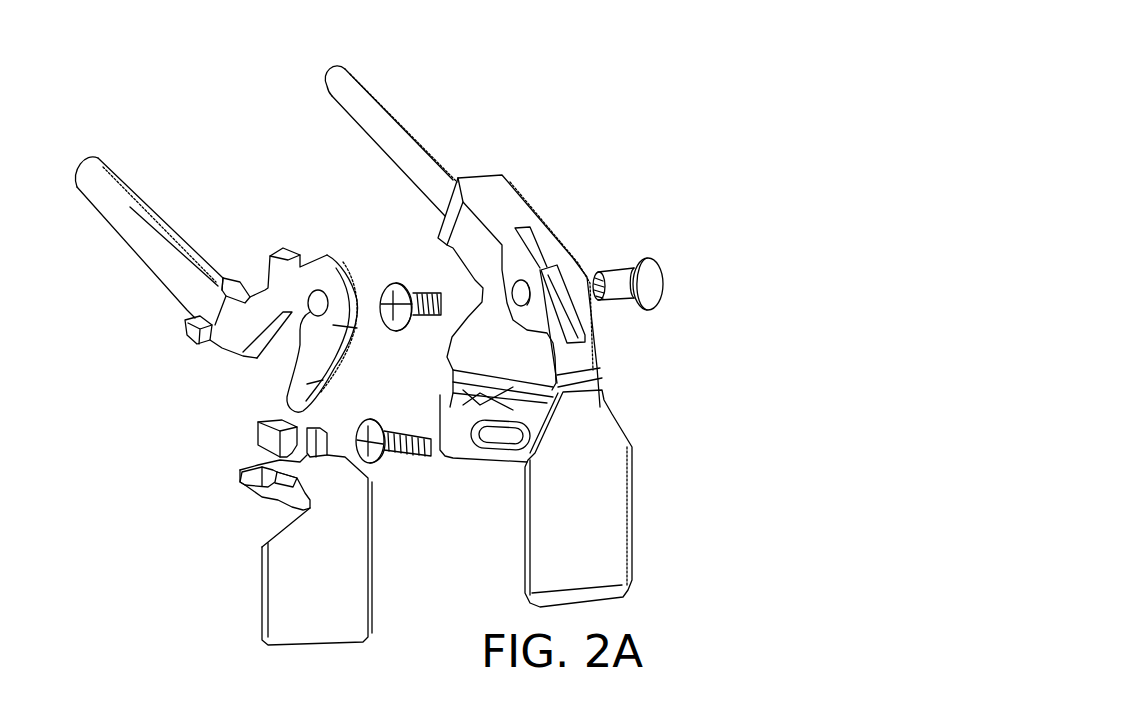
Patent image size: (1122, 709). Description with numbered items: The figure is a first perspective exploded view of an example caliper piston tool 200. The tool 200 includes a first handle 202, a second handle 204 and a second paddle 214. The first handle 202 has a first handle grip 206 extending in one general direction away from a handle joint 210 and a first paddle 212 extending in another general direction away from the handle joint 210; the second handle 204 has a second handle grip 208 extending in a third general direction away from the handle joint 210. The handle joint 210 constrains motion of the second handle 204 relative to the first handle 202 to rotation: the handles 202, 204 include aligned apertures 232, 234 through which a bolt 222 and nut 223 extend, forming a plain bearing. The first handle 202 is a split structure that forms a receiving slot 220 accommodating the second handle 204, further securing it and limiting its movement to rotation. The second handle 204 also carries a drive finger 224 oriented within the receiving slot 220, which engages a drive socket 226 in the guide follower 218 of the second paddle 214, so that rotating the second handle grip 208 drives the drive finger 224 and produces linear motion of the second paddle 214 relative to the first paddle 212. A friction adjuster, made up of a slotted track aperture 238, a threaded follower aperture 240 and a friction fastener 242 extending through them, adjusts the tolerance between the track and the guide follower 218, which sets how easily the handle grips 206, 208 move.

The caliper piston tool 200 is at (550, 170).
The first handle 202 is at (360, 162).
The second handle 204 is at (170, 324).
The first handle grip 206 is at (420, 128).
The second handle grip 208 is at (177, 231).
The handle joint 210 is at (590, 262).
The first paddle 212 is at (627, 514).
The second paddle 214 is at (363, 610).
The guide follower 218 is at (249, 477).
The receiving slot 220 is at (573, 315).
The bolt 222 is at (399, 283).
The nut 223 is at (660, 298).
The drive finger 224 is at (292, 402).
The drive socket 226 is at (305, 440).
The aperture 232 is at (518, 280).
The aperture 234 is at (313, 313).
The track aperture 238 is at (508, 438).
The follower aperture 240 is at (275, 480).
The friction fastener 242 is at (376, 462).